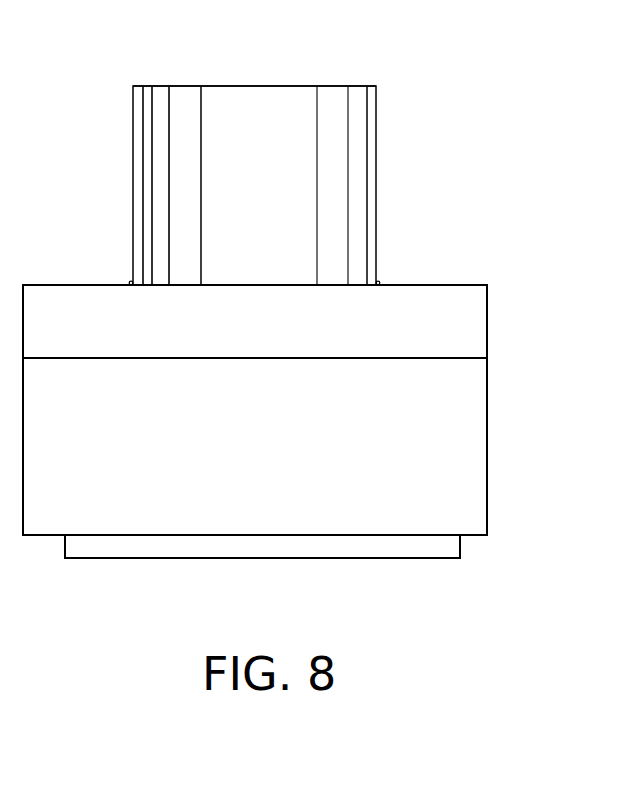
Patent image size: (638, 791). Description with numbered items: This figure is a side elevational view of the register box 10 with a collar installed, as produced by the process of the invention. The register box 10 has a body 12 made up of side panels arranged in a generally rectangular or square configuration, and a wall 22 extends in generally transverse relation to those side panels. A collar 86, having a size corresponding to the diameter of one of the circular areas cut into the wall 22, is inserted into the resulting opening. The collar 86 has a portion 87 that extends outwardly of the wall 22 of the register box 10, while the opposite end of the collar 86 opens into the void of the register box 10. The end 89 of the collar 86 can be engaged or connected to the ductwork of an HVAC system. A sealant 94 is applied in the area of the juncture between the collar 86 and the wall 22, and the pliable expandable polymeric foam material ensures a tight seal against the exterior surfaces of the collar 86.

The register box 10 is at (450, 188).
The body 12 is at (488, 470).
The wall 22 is at (465, 285).
The collar 86 is at (360, 157).
The portion 87 is at (158, 190).
The end 89 is at (356, 85).
The sealant 94 is at (378, 282).